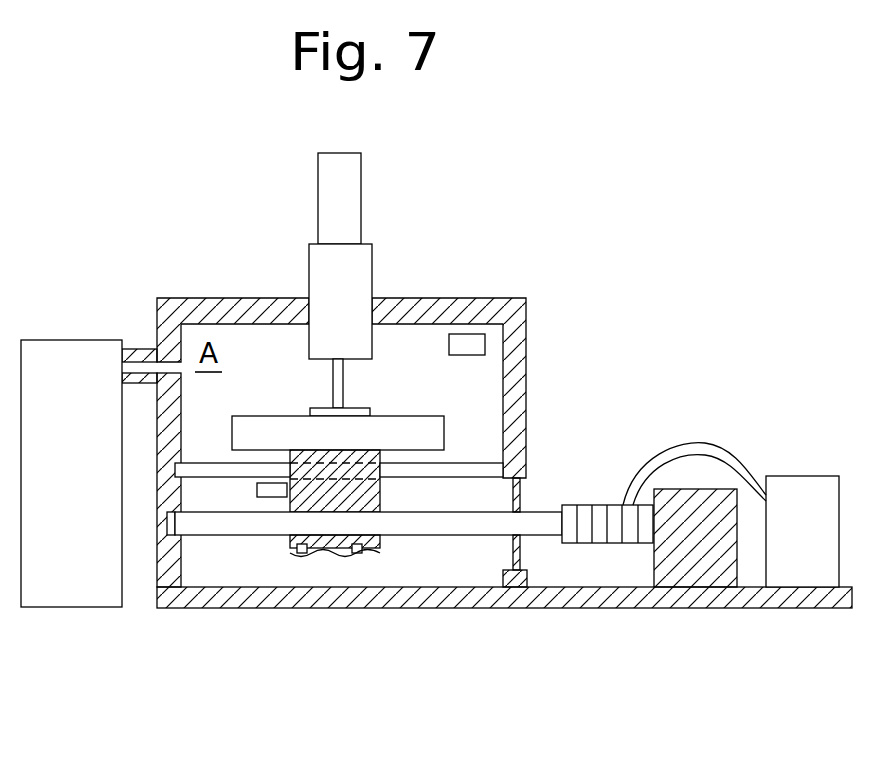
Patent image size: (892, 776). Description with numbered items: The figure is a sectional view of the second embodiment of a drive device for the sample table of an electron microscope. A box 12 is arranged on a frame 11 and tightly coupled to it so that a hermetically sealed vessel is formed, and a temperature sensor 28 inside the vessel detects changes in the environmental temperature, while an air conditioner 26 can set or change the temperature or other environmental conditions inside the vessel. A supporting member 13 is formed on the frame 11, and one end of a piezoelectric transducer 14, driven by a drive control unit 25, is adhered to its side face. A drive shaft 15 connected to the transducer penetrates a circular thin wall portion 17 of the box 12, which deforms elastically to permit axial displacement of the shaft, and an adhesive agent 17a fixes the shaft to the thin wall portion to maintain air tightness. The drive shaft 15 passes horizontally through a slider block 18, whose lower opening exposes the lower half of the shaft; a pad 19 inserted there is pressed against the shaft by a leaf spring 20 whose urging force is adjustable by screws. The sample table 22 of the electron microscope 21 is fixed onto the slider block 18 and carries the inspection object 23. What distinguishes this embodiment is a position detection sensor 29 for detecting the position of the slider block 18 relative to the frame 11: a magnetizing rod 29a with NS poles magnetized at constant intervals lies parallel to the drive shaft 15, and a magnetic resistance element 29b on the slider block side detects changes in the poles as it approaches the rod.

The frame 11 is at (326, 600).
The box 12 is at (503, 311).
The supporting member 13 is at (674, 592).
The piezoelectric transducer 14 is at (571, 505).
The drive shaft 15 is at (417, 530).
The thin wall portion 17 is at (517, 553).
The adhesive agent 17a is at (506, 548).
The slider block 18 is at (262, 497).
The pad 19 is at (318, 556).
The leaf spring 20 is at (348, 558).
The electron microscope 21 is at (332, 187).
The sample table 22 is at (412, 425).
The inspection object 23 is at (322, 408).
The drive control unit 25 is at (793, 476).
The air conditioner 26 is at (66, 352).
The temperature sensor 28 is at (472, 348).
The position detection sensor 29 is at (284, 603).
The magnetizing rod 29a is at (170, 513).
The magnetic resistance element 29b is at (188, 471).